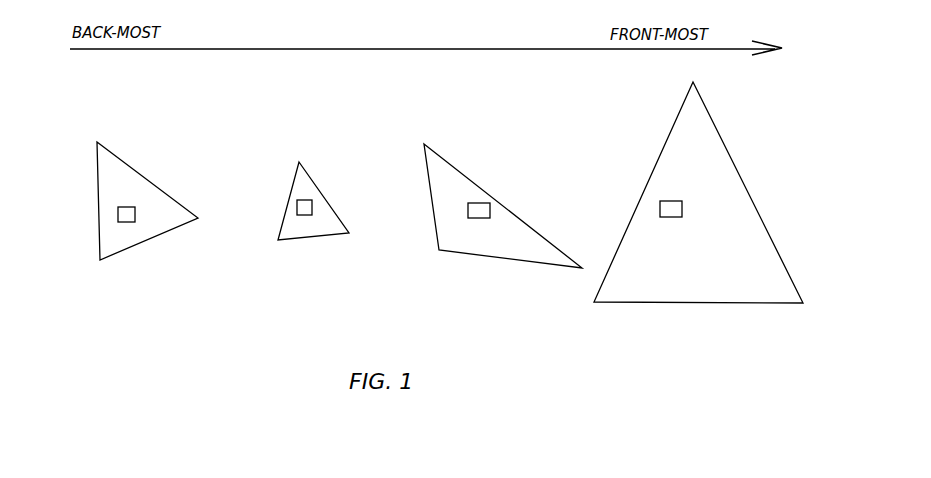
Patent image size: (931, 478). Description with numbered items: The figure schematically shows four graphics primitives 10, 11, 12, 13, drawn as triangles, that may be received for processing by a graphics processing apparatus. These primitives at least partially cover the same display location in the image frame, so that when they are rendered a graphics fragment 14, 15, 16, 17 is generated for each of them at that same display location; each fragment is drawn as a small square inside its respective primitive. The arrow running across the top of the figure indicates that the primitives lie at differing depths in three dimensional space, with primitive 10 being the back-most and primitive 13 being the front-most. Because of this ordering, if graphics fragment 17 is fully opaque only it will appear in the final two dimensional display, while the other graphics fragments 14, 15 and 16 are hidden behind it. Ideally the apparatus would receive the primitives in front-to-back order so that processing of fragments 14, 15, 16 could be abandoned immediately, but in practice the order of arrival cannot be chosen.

The graphics primitive 10 is at (128, 252).
The graphics primitive 11 is at (307, 240).
The graphics primitive 12 is at (476, 253).
The graphics primitive 13 is at (651, 305).
The graphics fragment 14 is at (140, 204).
The graphics fragment 15 is at (303, 200).
The graphics fragment 16 is at (468, 206).
The graphics fragment 17 is at (682, 201).